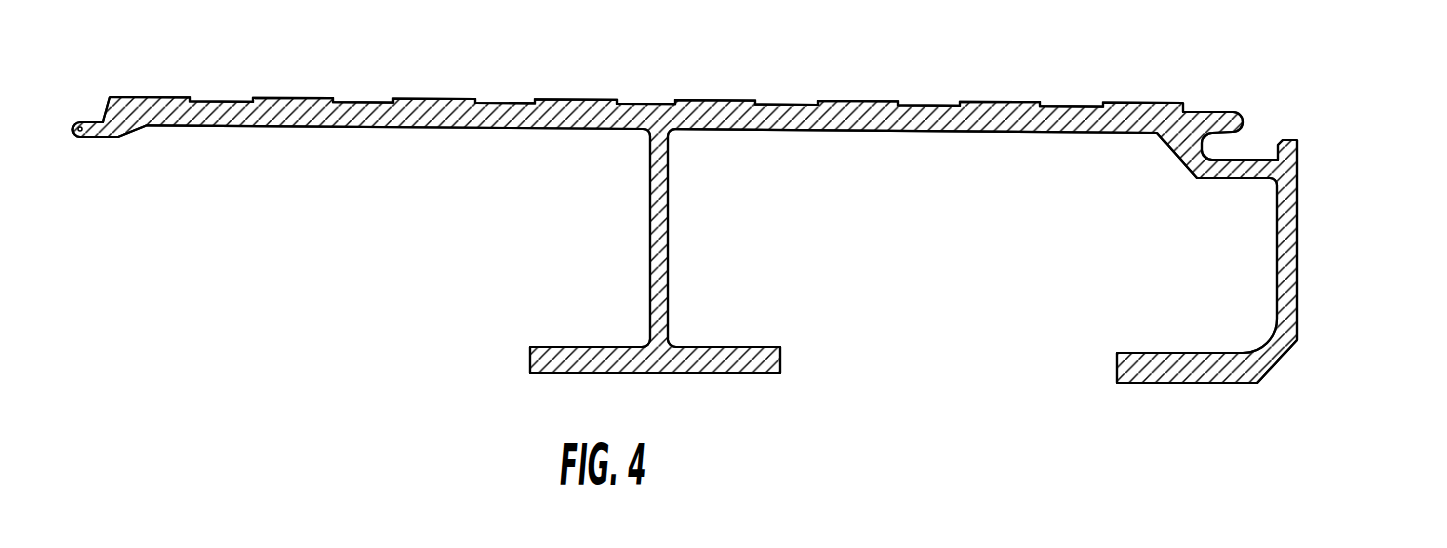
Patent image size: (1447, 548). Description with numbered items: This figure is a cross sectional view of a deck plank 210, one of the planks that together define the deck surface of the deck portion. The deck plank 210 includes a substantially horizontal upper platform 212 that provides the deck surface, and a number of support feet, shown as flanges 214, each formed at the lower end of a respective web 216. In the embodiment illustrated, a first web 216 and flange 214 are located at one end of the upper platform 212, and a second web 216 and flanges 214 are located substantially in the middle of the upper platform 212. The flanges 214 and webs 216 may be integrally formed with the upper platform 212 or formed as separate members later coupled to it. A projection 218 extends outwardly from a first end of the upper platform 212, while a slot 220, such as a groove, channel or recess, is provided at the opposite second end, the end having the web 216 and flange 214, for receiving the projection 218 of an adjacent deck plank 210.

The deck plank 210 is at (681, 68).
The upper platform 212 is at (292, 97).
The flange 214 is at (723, 377).
The web 216 is at (650, 247).
The projection 218 is at (92, 138).
The slot 220 is at (1268, 136).